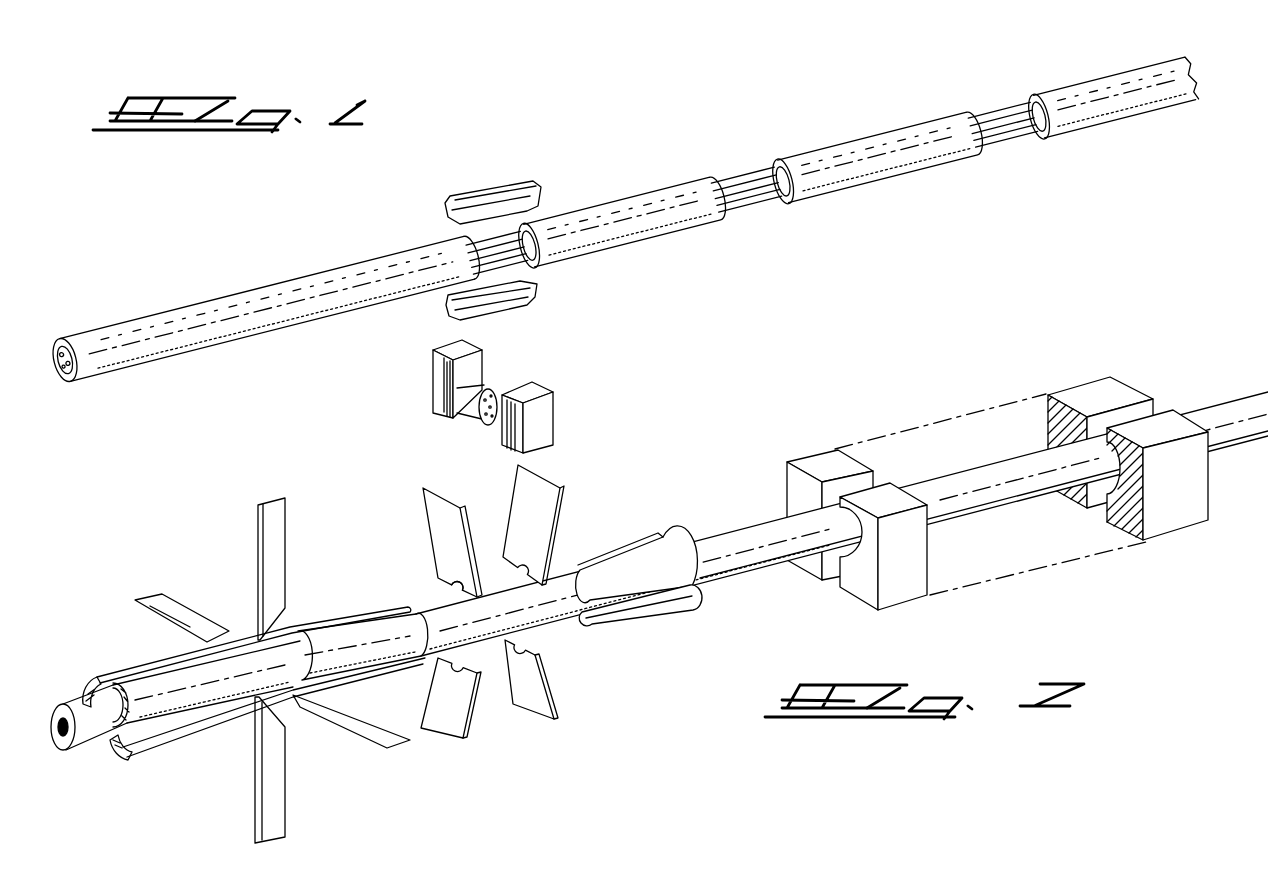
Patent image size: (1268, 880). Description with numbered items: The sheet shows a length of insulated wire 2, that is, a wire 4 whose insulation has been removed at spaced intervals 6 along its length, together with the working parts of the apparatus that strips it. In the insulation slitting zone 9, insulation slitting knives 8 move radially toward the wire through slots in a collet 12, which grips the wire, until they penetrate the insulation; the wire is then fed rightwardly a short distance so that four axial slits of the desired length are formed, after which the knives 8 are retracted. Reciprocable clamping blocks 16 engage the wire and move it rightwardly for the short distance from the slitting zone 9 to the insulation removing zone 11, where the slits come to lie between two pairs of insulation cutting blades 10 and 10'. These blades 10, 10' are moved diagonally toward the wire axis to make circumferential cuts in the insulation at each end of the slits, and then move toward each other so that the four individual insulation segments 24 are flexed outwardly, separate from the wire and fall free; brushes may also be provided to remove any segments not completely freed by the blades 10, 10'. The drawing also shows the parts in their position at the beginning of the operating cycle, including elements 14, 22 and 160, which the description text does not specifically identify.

In FIG. 1, the insulated wire 2 is at (632, 202).
In FIG. 1, the wire 4 is at (888, 74).
In FIG. 2, the wire 4 is at (1239, 400).
In FIG. 1, the spaced intervals 6 is at (745, 178).
In FIG. 1, the insulation segments 24 is at (470, 196).
In FIG. 2, the insulation slitting knives 8 is at (162, 598).
In FIG. 2, the insulation slitting zone 9 is at (211, 530).
In FIG. 2, the insulation cutting blades 10 is at (425, 634).
In FIG. 2, the insulation cutting blades 10' is at (563, 592).
In FIG. 2, the insulation removing zone 11 is at (482, 494).
In FIG. 2, the collet 12 is at (160, 745).
In FIG. 2, the half shell 14 is at (658, 606).
In FIG. 2, the reciprocable clamping blocks 16 is at (810, 452).
In FIG. 2, the notch 22 is at (442, 577).
In FIG. 2, the crimping die 160 is at (471, 414).